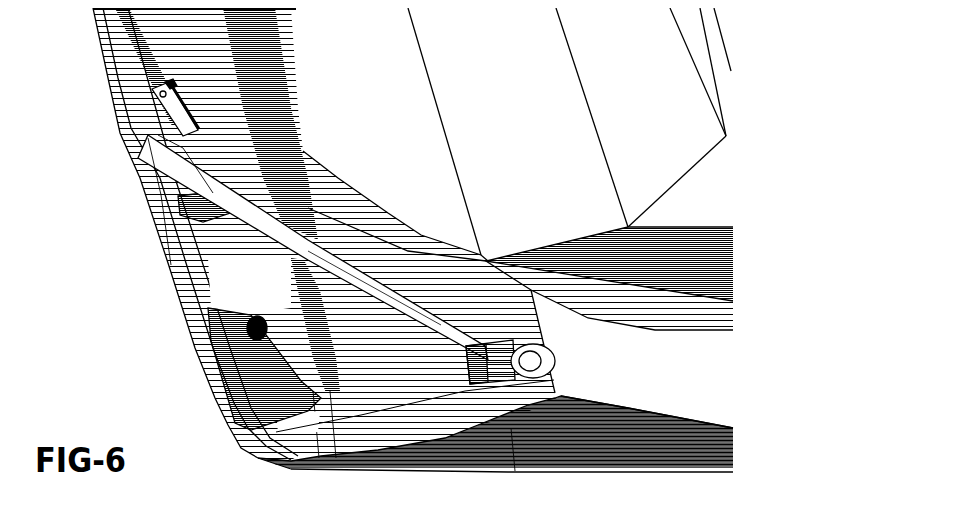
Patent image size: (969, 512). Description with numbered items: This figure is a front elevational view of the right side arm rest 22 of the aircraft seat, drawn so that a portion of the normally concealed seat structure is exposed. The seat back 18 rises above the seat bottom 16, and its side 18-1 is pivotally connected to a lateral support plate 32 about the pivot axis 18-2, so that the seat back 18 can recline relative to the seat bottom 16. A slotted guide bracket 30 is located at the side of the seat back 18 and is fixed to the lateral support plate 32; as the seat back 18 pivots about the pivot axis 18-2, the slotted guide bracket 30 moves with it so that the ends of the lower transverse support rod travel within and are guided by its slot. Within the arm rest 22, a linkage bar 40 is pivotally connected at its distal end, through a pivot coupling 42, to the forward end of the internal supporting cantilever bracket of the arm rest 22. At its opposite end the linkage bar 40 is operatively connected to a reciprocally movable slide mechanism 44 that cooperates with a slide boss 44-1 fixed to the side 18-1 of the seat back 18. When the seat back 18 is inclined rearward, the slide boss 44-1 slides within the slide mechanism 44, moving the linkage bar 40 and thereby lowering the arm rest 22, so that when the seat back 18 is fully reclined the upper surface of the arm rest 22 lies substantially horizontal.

The seat bottom 16 is at (673, 378).
The seat back 18 is at (496, 60).
The side of the seat back 18-1 is at (270, 284).
The pivot axis 18-2 is at (243, 319).
The right side arm rest 22 is at (403, 242).
The slotted guide bracket 30 is at (222, 358).
The lateral support plate 32 is at (484, 249).
The linkage bar 40 is at (305, 228).
The pivot coupling 42 is at (487, 352).
The slide mechanism 44 is at (125, 126).
The slide boss 44-1 is at (143, 78).